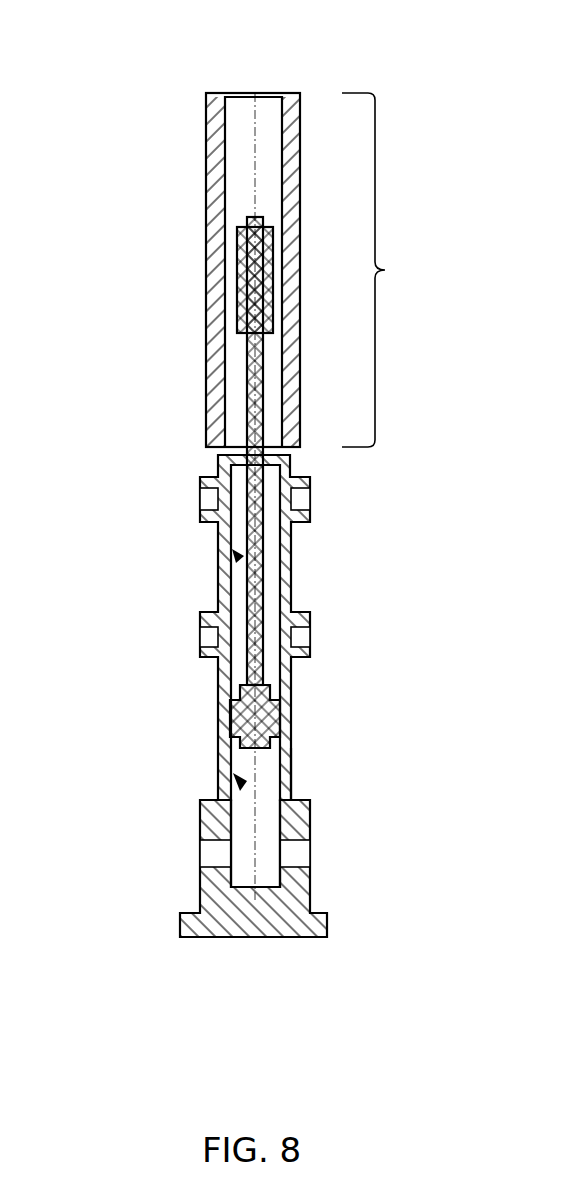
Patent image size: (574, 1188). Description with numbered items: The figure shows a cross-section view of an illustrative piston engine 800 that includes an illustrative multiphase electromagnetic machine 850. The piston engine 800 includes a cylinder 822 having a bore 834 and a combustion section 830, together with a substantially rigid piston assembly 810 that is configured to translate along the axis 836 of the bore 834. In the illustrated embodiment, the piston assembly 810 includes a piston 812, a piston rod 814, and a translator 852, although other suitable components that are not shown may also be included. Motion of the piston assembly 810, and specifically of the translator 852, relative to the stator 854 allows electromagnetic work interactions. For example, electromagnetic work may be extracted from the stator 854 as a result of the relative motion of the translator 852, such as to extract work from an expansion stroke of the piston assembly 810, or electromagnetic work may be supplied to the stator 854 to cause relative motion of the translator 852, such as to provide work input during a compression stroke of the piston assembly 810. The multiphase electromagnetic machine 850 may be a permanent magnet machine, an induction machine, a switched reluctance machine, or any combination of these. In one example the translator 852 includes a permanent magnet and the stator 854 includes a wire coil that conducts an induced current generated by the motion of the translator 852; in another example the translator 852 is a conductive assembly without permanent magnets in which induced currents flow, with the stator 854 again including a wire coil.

The piston engine 800 is at (276, 56).
The piston assembly 810 is at (218, 555).
The piston 812 is at (240, 683).
The piston rod 814 is at (247, 410).
The cylinder 822 is at (200, 814).
The combustion section 830 is at (235, 778).
The bore 834 is at (267, 830).
The axis 836 is at (291, 768).
The multiphase electromagnetic machine 850 is at (394, 270).
The translator 852 is at (237, 249).
The stator 854 is at (206, 168).